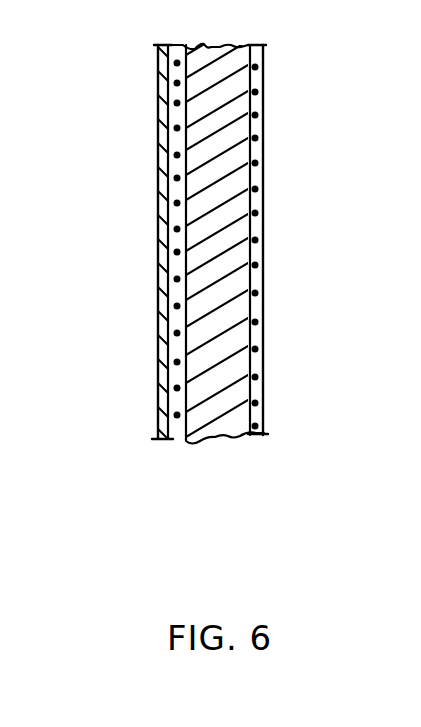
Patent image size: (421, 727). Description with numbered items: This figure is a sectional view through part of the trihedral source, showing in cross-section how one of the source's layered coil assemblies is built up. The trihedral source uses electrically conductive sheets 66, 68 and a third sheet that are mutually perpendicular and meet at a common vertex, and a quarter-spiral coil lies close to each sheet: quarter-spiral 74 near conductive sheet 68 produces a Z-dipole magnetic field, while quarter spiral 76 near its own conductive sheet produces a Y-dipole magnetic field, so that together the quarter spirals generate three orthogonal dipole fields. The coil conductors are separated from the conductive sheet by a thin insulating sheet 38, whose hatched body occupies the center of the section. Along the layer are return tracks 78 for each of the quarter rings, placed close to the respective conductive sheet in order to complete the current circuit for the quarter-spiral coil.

The electrically conductive sheet 66 is at (158, 438).
The electrically conductive sheet 68 is at (163, 242).
The return tracks 78 is at (180, 440).
The thin insulating sheet 38 is at (227, 440).
The quarter-spiral 74 is at (255, 247).
The quarter spiral 76 is at (253, 437).